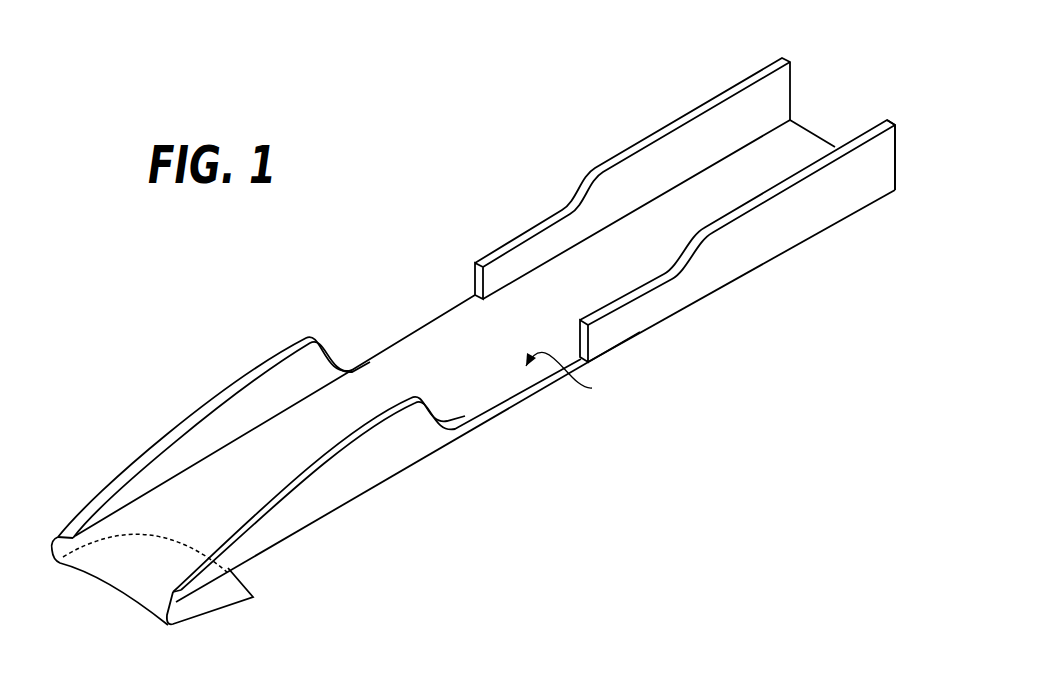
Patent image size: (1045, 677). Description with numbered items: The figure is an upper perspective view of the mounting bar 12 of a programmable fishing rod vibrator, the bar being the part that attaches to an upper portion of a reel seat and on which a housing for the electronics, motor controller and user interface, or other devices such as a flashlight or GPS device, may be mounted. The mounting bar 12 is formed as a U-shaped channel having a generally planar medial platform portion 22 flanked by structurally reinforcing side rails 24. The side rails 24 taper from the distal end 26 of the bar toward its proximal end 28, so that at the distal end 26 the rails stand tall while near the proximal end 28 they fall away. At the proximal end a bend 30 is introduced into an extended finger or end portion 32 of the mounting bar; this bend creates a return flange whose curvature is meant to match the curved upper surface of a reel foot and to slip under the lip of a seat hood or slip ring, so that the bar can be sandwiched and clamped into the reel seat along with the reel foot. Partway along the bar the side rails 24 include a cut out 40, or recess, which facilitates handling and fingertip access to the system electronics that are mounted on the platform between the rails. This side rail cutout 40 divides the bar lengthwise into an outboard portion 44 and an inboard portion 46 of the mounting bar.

The mounting bar 12 is at (152, 385).
The medial platform portion 22 is at (432, 335).
The side rails 24 is at (687, 115).
The distal end 26 is at (895, 174).
The proximal end 28 is at (86, 515).
The bend 30 is at (147, 580).
The end portion 32 is at (214, 603).
The cut out 40 is at (573, 377).
The outboard portion 44 is at (772, 250).
The inboard portion 46 is at (365, 482).